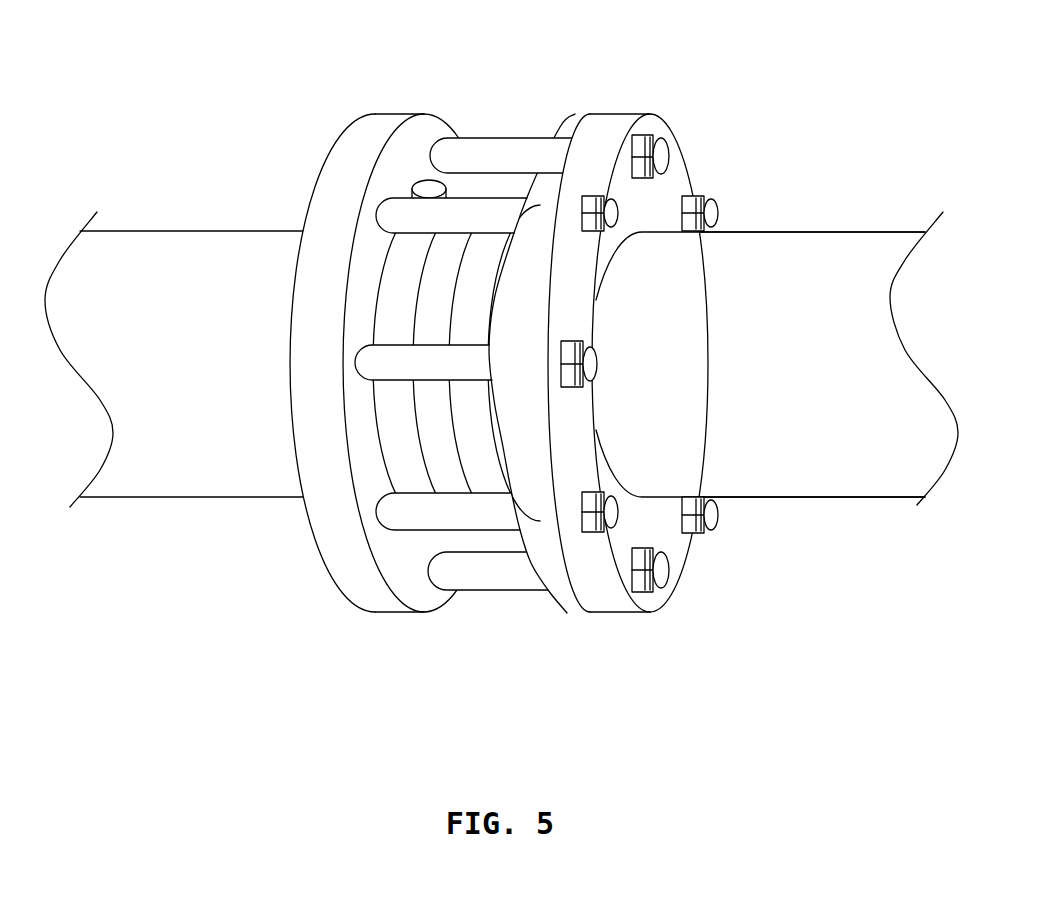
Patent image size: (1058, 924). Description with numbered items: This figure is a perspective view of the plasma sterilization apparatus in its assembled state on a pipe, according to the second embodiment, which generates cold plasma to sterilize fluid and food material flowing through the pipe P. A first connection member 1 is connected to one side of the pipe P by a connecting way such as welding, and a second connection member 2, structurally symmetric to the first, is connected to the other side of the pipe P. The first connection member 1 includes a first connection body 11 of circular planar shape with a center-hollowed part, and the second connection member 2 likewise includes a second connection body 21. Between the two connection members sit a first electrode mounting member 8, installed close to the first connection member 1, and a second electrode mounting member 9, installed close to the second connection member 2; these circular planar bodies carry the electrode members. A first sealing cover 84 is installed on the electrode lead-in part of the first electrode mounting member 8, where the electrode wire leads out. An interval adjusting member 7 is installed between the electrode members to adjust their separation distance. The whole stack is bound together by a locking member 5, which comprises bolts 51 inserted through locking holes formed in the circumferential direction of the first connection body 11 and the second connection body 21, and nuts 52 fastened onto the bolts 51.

The first connection member 1 is at (397, 365).
The second connection member 2 is at (624, 365).
The locking member 5 is at (697, 329).
The interval adjusting member 7 is at (450, 478).
The first electrode mounting member 8 is at (438, 262).
The second electrode mounting member 9 is at (500, 240).
The first connection body 11 is at (362, 590).
The second connection body 21 is at (583, 590).
The bolts 51 is at (670, 152).
The nuts 52 is at (650, 137).
The first sealing cover 84 is at (446, 180).
The pipe P is at (165, 490).